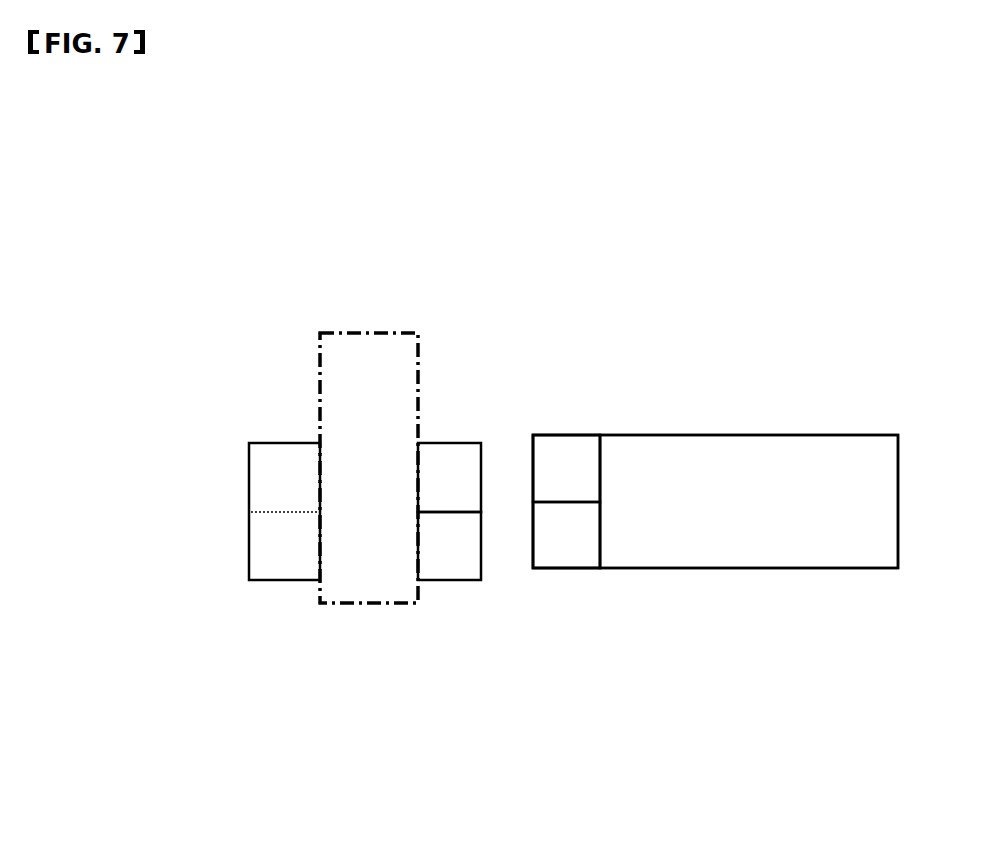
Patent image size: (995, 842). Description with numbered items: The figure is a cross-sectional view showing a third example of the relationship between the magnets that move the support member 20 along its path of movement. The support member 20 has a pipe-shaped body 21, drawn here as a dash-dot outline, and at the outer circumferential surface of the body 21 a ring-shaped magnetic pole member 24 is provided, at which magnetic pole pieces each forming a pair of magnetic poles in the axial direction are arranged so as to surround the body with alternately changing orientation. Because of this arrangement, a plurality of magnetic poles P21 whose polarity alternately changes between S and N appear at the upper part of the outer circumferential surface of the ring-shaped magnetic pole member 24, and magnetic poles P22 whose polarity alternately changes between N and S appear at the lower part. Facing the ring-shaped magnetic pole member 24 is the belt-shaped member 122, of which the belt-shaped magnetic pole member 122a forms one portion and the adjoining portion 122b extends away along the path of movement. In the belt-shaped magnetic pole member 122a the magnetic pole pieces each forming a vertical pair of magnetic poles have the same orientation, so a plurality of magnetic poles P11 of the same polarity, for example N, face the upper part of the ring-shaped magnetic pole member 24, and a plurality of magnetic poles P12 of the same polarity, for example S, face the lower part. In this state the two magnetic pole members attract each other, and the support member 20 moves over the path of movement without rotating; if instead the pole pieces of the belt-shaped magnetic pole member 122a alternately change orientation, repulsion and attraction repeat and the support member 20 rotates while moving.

The support member 20 is at (301, 312).
The pipe-shaped body 21 is at (365, 333).
The ring-shaped magnetic pole member 24 is at (278, 442).
The magnetic poles P21 is at (468, 456).
The magnetic poles P22 is at (483, 543).
The belt-shaped magnetic pole member assembly 122 is at (772, 404).
The belt-shaped magnetic pole member 122a is at (572, 433).
The belt-shaped member portion 122b is at (747, 555).
The magnetic poles P11 is at (535, 453).
The magnetic poles P12 is at (542, 545).